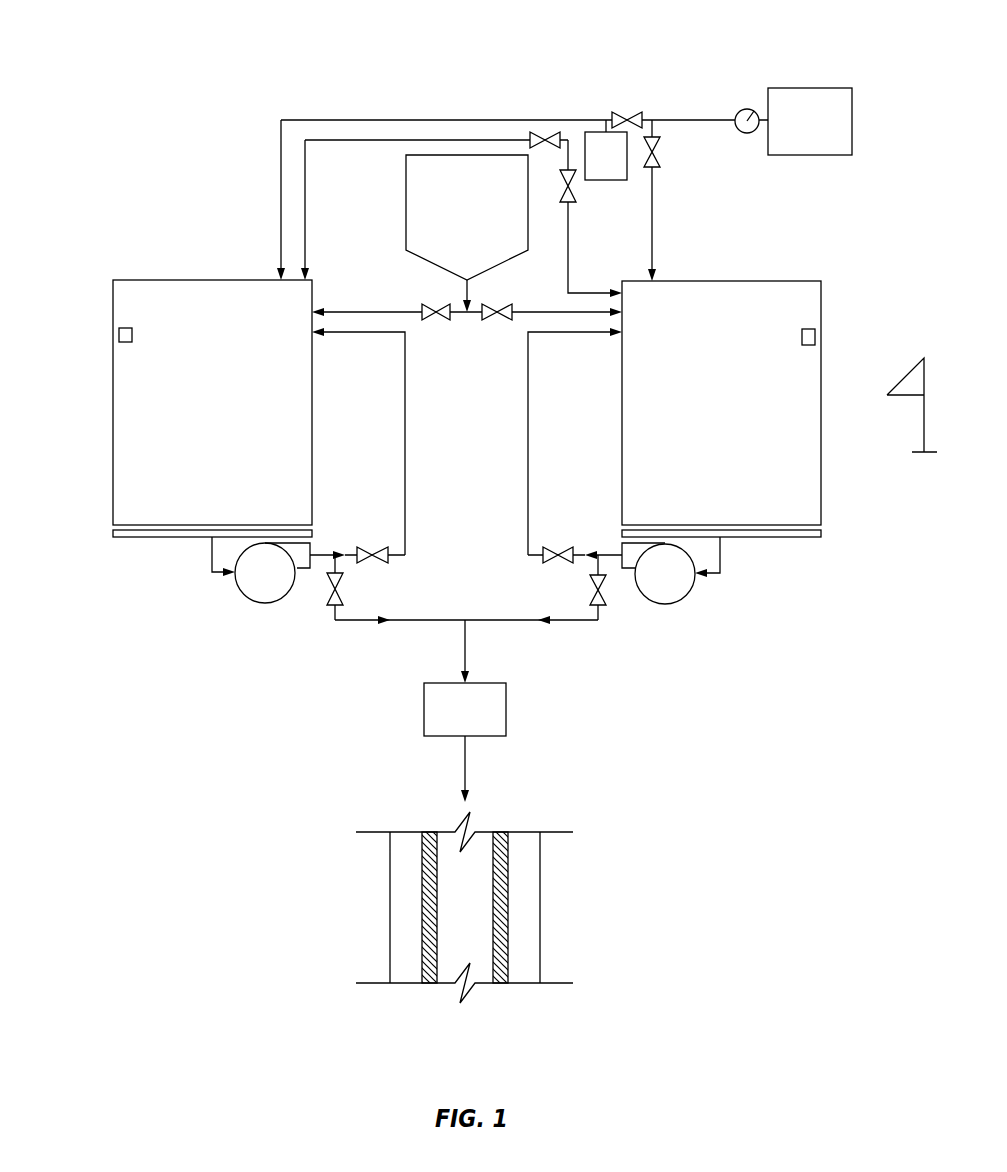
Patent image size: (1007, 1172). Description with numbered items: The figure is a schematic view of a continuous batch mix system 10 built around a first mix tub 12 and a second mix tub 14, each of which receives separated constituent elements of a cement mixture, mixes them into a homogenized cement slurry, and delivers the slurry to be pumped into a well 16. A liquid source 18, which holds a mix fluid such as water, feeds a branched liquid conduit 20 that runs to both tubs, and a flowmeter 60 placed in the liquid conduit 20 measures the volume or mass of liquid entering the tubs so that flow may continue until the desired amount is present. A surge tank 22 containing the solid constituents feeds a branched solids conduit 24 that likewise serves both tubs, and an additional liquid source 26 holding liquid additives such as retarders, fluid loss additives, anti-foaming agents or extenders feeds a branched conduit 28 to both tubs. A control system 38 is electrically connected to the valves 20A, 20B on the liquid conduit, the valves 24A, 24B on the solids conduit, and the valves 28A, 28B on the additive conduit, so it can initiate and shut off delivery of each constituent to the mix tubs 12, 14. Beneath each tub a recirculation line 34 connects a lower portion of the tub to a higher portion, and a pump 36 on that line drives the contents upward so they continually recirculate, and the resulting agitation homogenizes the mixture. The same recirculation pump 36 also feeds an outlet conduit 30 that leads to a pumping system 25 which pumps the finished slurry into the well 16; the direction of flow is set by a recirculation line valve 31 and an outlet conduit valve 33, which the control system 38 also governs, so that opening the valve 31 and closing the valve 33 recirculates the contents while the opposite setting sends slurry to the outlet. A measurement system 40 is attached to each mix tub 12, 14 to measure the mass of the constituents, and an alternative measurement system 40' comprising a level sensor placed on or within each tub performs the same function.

The continuous batch mix system 10 is at (750, 40).
The first mix tub 12 is at (168, 280).
The second mix tub 14 is at (775, 281).
The well 16 is at (533, 826).
The liquid source 18 is at (806, 88).
The branched liquid conduit 20 is at (703, 120).
The liquid conduit valve 20A is at (618, 113).
The liquid conduit valve 20B is at (659, 162).
The surge tank 22 is at (406, 205).
The branched solids conduit 24 is at (470, 292).
The solids conduit valve 24A is at (428, 305).
The solids conduit valve 24B is at (502, 320).
The pumping system 25 is at (506, 708).
The additional liquid source 26 is at (604, 132).
The branched additive conduit 28 is at (570, 140).
The additive conduit valve 28A is at (538, 133).
The additive conduit valve 28B is at (573, 190).
The outlet conduit 30 is at (440, 622).
The recirculation line valve 31 is at (378, 549).
The outlet conduit valve 33 is at (340, 598).
The recirculation line 34 is at (405, 428).
The recirculation pump 36 is at (265, 603).
The control system 38 is at (905, 378).
The measurement system 40 is at (467, 524).
The alternative measurement system 40' is at (467, 319).
The flowmeter 60 is at (747, 134).